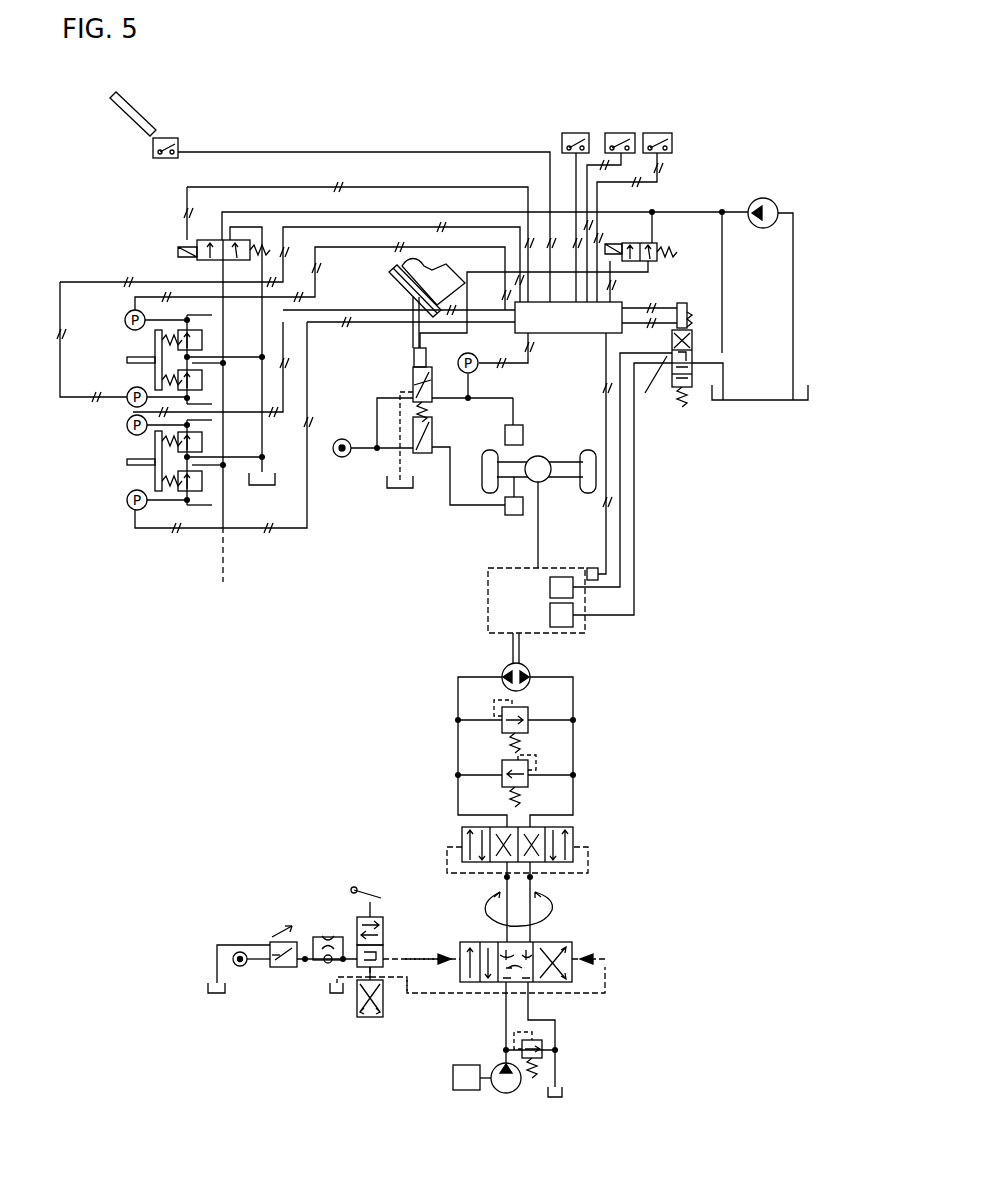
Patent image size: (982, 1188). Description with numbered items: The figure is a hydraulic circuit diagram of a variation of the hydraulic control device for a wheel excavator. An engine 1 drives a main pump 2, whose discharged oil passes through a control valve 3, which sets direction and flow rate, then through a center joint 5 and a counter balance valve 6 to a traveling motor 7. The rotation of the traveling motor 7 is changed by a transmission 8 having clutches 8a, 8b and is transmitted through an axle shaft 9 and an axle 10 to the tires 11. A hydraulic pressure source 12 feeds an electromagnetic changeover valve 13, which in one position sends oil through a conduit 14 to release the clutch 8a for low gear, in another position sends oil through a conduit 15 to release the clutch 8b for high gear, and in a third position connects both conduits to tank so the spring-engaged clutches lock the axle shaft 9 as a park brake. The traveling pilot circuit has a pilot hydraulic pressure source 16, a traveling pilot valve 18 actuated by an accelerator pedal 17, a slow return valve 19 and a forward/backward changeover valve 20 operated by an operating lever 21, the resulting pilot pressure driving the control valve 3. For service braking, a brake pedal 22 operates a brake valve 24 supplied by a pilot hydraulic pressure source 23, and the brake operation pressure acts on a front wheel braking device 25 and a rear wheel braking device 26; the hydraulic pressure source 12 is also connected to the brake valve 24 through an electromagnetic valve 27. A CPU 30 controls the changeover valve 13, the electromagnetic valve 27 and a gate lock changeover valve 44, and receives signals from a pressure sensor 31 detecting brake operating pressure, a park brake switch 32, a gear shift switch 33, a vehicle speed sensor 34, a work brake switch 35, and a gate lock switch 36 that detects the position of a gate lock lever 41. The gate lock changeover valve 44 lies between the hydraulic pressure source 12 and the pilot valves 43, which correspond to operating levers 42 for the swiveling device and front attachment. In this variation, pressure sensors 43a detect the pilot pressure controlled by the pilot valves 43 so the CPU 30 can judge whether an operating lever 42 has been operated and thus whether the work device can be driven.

The engine 1 is at (469, 1066).
The main pump 2 is at (498, 1066).
The control valve 3 is at (568, 982).
The center joint 5 is at (484, 903).
The counter balance valve 6 is at (462, 836).
The traveling motor 7 is at (502, 666).
The transmission 8 is at (585, 628).
The clutch 8a is at (549, 585).
The clutch 8b is at (549, 610).
The axle shaft 9 is at (540, 522).
The axle 10 is at (544, 457).
The tires 11 is at (591, 494).
The hydraulic pressure source 12 is at (770, 200).
The electromagnetic changeover valve 13 is at (690, 395).
The conduit 14 is at (620, 505).
The conduit 15 is at (634, 545).
The pilot hydraulic pressure source 16 is at (240, 968).
The accelerator pedal 17 is at (280, 938).
The traveling pilot valve 18 is at (283, 968).
The slow return valve 19 is at (340, 936).
The forward/backward changeover valve 20 is at (385, 1003).
The operating lever 21 is at (385, 929).
The brake pedal 22 is at (402, 280).
The pilot hydraulic pressure source 23 is at (336, 460).
The brake valve 24 is at (413, 378).
The front wheel braking device 25 is at (523, 424).
The rear wheel braking device 26 is at (513, 496).
The electromagnetic valve 27 is at (658, 262).
The CPU 30 is at (560, 337).
The pressure sensor 31 is at (480, 372).
The park brake switch 32 is at (575, 132).
The gear shift switch 33 is at (616, 132).
The vehicle speed sensor 34 is at (592, 568).
The work brake switch 35 is at (656, 132).
The gate lock switch 36 is at (182, 143).
The gate lock lever 41 is at (139, 113).
The operating levers 42 is at (130, 359).
The pilot valves 43 is at (203, 373).
The pressure sensor 43a is at (128, 313).
The gate lock changeover valve 44 is at (197, 255).